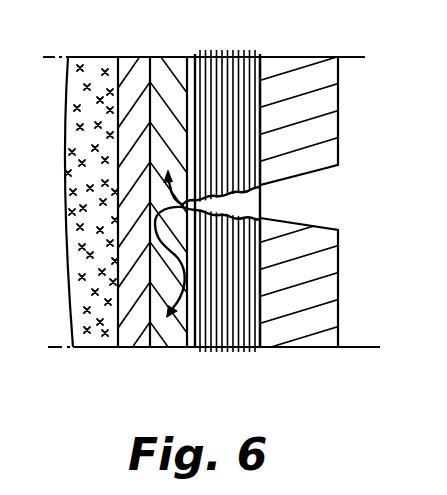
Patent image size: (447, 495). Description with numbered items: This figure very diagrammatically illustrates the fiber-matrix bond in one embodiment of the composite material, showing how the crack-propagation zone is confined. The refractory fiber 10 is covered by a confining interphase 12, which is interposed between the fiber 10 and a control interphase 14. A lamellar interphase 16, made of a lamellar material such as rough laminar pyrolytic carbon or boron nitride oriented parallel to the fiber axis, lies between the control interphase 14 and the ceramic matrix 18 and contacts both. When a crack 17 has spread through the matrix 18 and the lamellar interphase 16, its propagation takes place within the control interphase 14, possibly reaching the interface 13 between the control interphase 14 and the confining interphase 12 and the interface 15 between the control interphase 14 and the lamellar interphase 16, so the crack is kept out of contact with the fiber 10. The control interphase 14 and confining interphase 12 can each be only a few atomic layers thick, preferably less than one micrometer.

The refractory fiber 10 is at (90, 68).
The confining interphase 12 is at (135, 72).
The interface between control interphase and confining interphase 13 is at (147, 348).
The control interphase 14 is at (169, 70).
The interface between control interphase and lamellar interphase 15 is at (186, 348).
The lamellar interphase 16 is at (223, 72).
The crack 17 is at (305, 197).
The ceramic matrix 18 is at (300, 70).